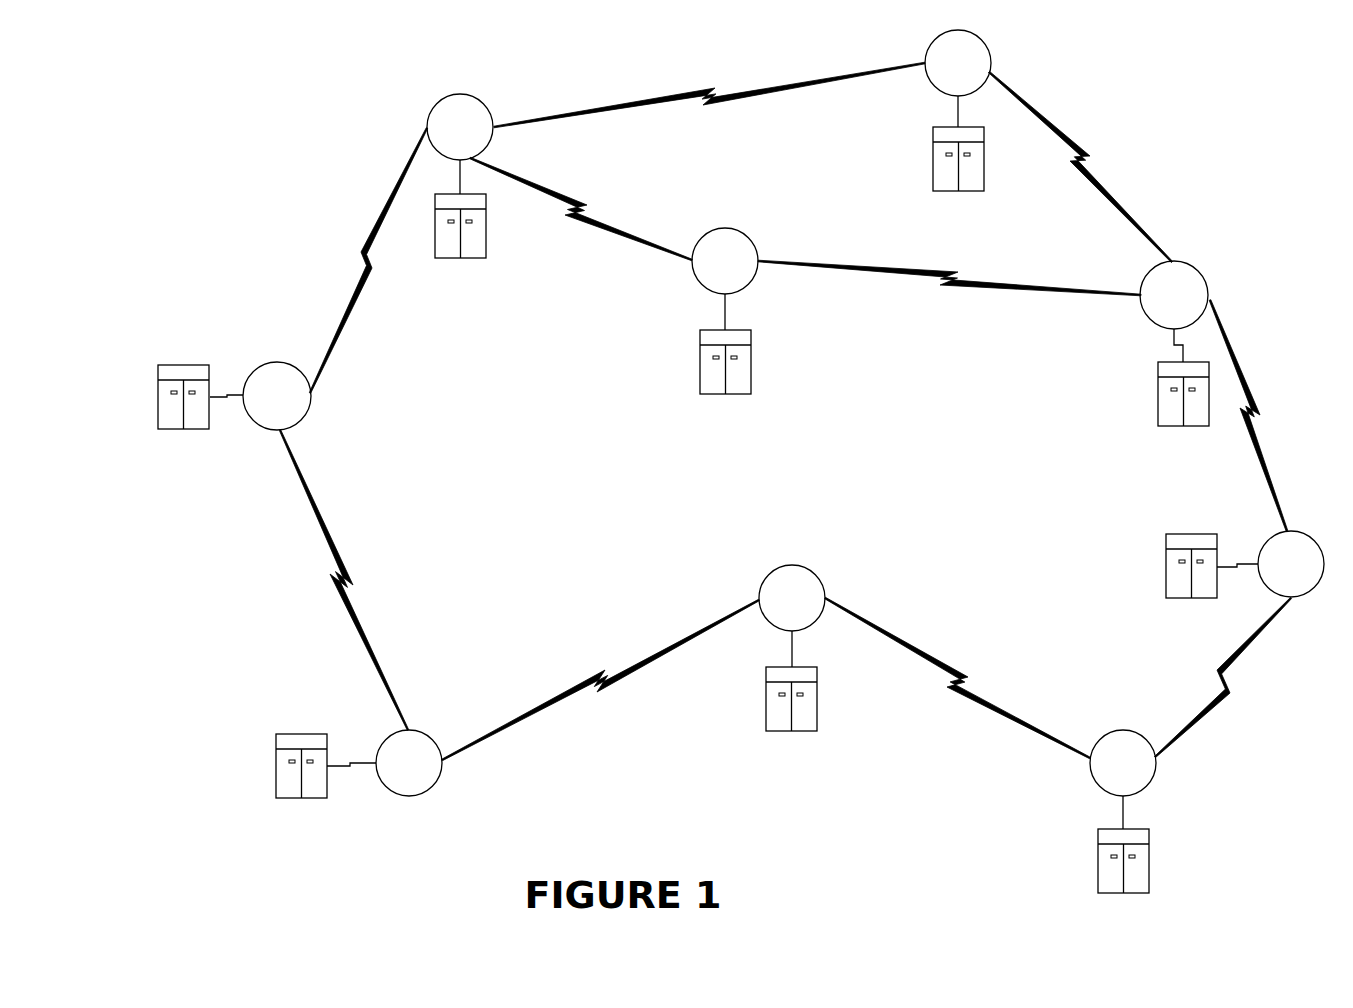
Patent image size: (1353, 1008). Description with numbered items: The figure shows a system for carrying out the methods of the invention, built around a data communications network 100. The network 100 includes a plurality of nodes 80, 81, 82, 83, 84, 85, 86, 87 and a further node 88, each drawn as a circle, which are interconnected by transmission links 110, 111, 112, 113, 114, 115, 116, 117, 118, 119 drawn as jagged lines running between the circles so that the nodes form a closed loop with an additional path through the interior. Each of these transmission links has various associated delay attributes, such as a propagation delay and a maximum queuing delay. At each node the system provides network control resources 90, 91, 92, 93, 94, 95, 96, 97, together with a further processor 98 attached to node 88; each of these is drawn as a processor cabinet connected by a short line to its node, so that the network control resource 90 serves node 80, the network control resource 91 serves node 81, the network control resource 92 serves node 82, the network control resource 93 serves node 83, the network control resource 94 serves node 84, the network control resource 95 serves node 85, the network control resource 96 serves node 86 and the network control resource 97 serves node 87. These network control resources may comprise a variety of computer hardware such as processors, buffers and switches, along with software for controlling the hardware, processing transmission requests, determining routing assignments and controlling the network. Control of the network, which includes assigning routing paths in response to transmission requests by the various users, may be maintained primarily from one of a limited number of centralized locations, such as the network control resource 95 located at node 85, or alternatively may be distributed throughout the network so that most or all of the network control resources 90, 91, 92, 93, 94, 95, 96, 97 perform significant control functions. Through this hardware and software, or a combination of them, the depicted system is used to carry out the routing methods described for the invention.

The node 80 is at (277, 396).
The node 81 is at (409, 763).
The node 82 is at (460, 127).
The node 83 is at (725, 261).
The node 84 is at (792, 598).
The node 85 is at (1174, 295).
The node 86 is at (1123, 763).
The node 87 is at (1291, 564).
The node 88 is at (958, 63).
The network control resource 90 is at (196, 392).
The network control resource 91 is at (300, 777).
The network control resource 92 is at (466, 220).
The network control resource 93 is at (732, 356).
The network control resource 94 is at (797, 693).
The network control resource 95 is at (1166, 389).
The network control resource 96 is at (1130, 856).
The network control resource 97 is at (1188, 578).
The network control resource 98 is at (942, 155).
The data communications network 100 is at (736, 473).
The transmission link 110 is at (368, 261).
The transmission link 111 is at (343, 580).
The transmission link 112 is at (709, 92).
The transmission link 113 is at (581, 208).
The transmission link 114 is at (949, 268).
The transmission link 115 is at (1080, 166).
The transmission link 116 is at (601, 679).
The transmission link 117 is at (958, 677).
The transmission link 118 is at (1222, 678).
The transmission link 119 is at (1252, 416).